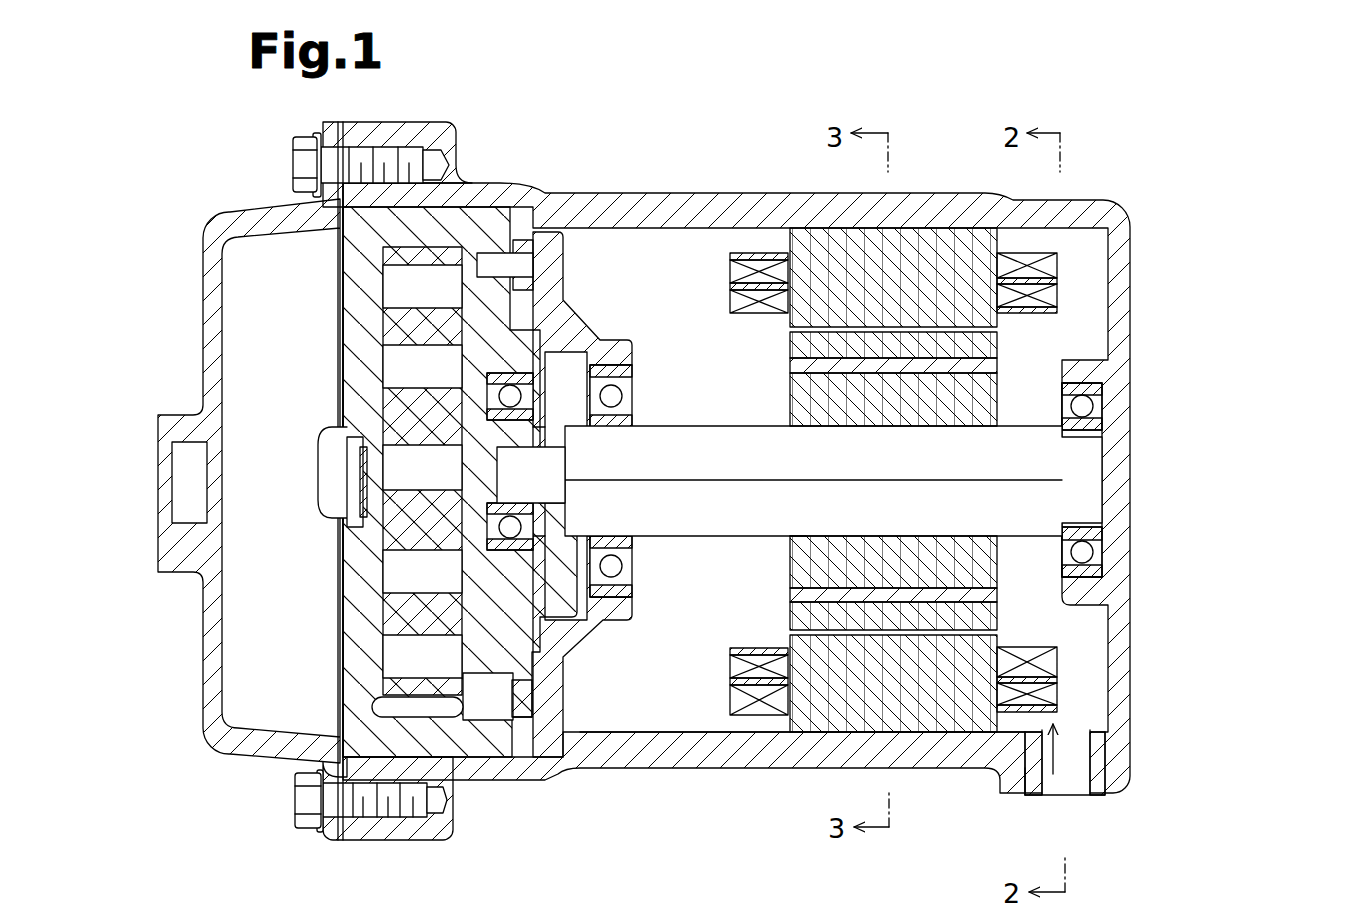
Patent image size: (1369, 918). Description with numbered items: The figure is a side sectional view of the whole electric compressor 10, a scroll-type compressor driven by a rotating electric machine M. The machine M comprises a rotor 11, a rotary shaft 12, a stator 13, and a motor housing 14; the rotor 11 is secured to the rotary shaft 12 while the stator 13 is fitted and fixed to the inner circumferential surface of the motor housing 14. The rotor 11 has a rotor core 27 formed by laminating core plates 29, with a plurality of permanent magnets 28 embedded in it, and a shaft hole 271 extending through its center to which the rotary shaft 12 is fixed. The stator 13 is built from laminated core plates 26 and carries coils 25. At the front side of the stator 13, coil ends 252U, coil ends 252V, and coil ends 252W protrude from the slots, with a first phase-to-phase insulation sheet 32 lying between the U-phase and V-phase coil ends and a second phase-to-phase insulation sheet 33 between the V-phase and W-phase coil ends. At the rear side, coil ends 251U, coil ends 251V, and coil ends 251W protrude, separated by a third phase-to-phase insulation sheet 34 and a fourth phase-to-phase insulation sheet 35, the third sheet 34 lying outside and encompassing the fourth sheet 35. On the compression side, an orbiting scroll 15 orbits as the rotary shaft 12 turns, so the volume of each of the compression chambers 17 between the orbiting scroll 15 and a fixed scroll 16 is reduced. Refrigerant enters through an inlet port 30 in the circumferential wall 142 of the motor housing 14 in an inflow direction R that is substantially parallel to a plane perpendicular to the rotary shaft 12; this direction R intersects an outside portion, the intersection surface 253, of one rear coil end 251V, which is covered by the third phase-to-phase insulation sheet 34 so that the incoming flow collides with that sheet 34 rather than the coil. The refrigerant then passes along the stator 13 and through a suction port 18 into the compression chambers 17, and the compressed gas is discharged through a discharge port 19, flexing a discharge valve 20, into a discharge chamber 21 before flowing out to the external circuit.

The electric compressor 10 is at (207, 115).
The rotor 11 is at (683, 363).
The rotary shaft 12 is at (658, 526).
The stator 13 is at (976, 512).
The motor housing 14 is at (1104, 200).
The circumferential wall 142 is at (637, 767).
The orbiting scroll 15 is at (508, 650).
The fixed scroll 16 is at (348, 284).
The compression chambers 17 is at (440, 381).
The suction port 18 is at (525, 700).
The discharge port 19 is at (363, 488).
The discharge valve 20 is at (347, 462).
The discharge chamber 21 is at (300, 668).
The coils 25 is at (1226, 253).
The core plates 26 is at (946, 507).
The coil ends of the U-phase coil 251U is at (1054, 266).
The coil ends of the V-phase coil 251V is at (1056, 291).
The coil ends of the W-phase coil 251W is at (1053, 661).
The coil ends of the U-phase coil 252U is at (728, 669).
The coil ends of the V-phase coil 252V is at (728, 269).
The coil ends of the W-phase coil 252W is at (760, 314).
The intersection surface 253 is at (1024, 770).
The rotor core 27 is at (843, 481).
The shaft hole 271 is at (805, 531).
The permanent magnets 28 is at (790, 367).
The core plates 29 is at (790, 389).
The inlet port 30 is at (1082, 796).
The first phase-to-phase insulation sheet 32 is at (741, 255).
The second phase-to-phase insulation sheet 33 is at (730, 286).
The third phase-to-phase insulation sheet 34 is at (1011, 288).
The fourth phase-to-phase insulation sheet 35 is at (1047, 311).
The rotating electric machine M is at (805, 172).
The inflow direction R is at (1105, 761).